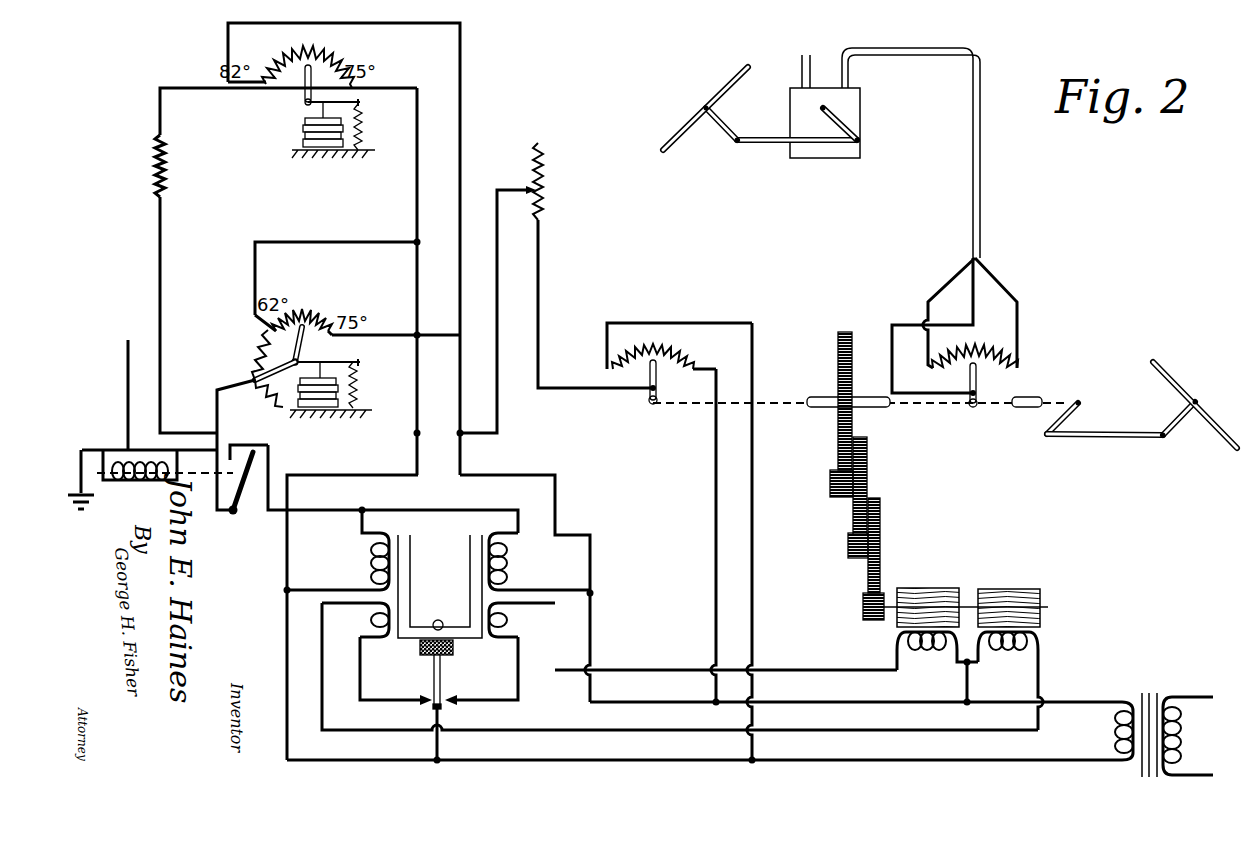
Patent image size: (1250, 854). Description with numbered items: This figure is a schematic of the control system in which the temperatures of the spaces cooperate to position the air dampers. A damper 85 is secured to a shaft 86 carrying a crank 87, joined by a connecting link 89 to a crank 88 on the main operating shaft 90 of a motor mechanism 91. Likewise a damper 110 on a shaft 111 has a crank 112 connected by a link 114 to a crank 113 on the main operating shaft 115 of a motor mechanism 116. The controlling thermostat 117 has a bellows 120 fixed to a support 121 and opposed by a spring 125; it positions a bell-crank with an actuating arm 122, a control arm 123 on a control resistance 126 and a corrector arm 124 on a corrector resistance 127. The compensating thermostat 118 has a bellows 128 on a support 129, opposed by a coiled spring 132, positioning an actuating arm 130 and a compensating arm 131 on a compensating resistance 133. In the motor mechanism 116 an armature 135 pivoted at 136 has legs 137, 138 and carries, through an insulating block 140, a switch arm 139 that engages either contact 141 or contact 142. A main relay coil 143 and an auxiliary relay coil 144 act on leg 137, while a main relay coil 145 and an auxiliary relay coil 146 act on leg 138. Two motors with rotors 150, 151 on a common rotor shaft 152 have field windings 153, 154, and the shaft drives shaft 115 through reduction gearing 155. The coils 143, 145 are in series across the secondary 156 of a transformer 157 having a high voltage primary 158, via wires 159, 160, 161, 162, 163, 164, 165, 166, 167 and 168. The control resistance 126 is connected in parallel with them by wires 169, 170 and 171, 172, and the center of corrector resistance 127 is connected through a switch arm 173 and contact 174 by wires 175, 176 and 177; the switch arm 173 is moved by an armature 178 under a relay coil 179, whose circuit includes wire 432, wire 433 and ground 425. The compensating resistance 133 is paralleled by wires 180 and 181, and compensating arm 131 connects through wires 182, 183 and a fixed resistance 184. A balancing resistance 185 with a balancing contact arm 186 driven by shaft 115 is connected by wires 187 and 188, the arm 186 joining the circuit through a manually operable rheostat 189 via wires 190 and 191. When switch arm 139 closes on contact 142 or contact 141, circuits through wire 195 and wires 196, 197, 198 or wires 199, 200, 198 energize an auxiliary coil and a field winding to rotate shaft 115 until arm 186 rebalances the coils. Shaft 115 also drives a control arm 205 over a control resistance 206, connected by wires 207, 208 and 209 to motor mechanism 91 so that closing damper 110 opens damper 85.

The damper 85 is at (678, 136).
The shaft 86 is at (704, 106).
The crank 87 is at (730, 130).
The crank 88 is at (846, 124).
The connecting link 89 is at (770, 144).
The main operating shaft 90 is at (822, 104).
The motor mechanism 91 is at (828, 154).
The damper 110 is at (1212, 428).
The shaft 111 is at (1196, 400).
The crank 112 is at (1180, 416).
The crank 113 is at (1066, 424).
The link 114 is at (1130, 440).
The main operating shaft 115 is at (880, 410).
The motor mechanism 116 is at (899, 531).
The controlling thermostat 117 is at (292, 352).
The compensating thermostat 118 is at (295, 106).
The bellows 120 is at (304, 392).
The support 121 is at (368, 410).
The actuating arm 122 is at (356, 364).
The control arm 123 is at (306, 360).
The corrector arm 124 is at (293, 362).
The spring 125 is at (358, 378).
The control resistance 126 is at (301, 318).
The corrector resistance 127 is at (233, 322).
The bellows 128 is at (304, 130).
The support 129 is at (302, 146).
The actuating arm 130 is at (360, 104).
The compensating arm 131 is at (312, 90).
The coiled spring 132 is at (360, 132).
The compensating resistance 133 is at (337, 60).
The armature 135 is at (404, 636).
The pivot 136 is at (440, 620).
The leg 137 is at (412, 566).
The leg 138 is at (474, 546).
The switch arm 139 is at (442, 670).
The block of insulating material 140 is at (454, 650).
The contact 141 is at (420, 698).
The contact 142 is at (458, 696).
The main relay coil 143 is at (372, 556).
The auxiliary relay coil 144 is at (371, 622).
The main relay coil 145 is at (510, 560).
The auxiliary relay coil 146 is at (510, 624).
The rotor 150 is at (930, 592).
The rotor 151 is at (1004, 592).
The rotor shaft 152 is at (886, 612).
The field winding 153 is at (924, 654).
The field winding 154 is at (1000, 652).
The reduction gearing 155 is at (878, 495).
The secondary 156 is at (1116, 744).
The transformer 157 is at (1150, 692).
The high voltage primary 158 is at (1182, 736).
The wire 159 is at (880, 760).
The wire 160 is at (576, 760).
The wire 161 is at (286, 626).
The wire 162 is at (300, 588).
The wire 163 is at (360, 530).
The wire 164 is at (442, 510).
The wire 165 is at (556, 592).
The wire 166 is at (592, 624).
The wire 167 is at (820, 700).
The wire 168 is at (1068, 702).
The wire 169 is at (392, 334).
The wire 170 is at (556, 494).
The wire 171 is at (340, 242).
The wire 172 is at (290, 492).
The switch arm 173 is at (250, 478).
The contact 174 is at (244, 468).
The wire 175 is at (218, 418).
The wire 176 is at (232, 516).
The wire 177 is at (286, 528).
The armature 178 is at (216, 462).
The relay coil 179 is at (216, 498).
The wire 180 is at (416, 200).
The wire 181 is at (462, 128).
The wire 182 is at (162, 122).
The wire 183 is at (160, 254).
The fixed resistance 184 is at (158, 184).
The balancing resistance 185 is at (690, 360).
The balancing contact arm 186 is at (658, 390).
The wire 187 is at (714, 494).
The wire 188 is at (754, 494).
The manually operable rheostat 189 is at (550, 178).
The wire 190 is at (540, 326).
The wire 191 is at (498, 430).
The wire 195 is at (440, 746).
The wire 196 is at (520, 694).
The wire 197 is at (650, 670).
The wire 198 is at (968, 688).
The wire 199 is at (362, 680).
The wire 200 is at (822, 730).
The control arm 205 is at (978, 388).
The control resistance 206 is at (982, 346).
The wire 207 is at (944, 286).
The wire 208 is at (1004, 284).
The wire 209 is at (906, 324).
The ground 425 is at (88, 498).
The wire 432 is at (128, 378).
The wire 433 is at (103, 450).